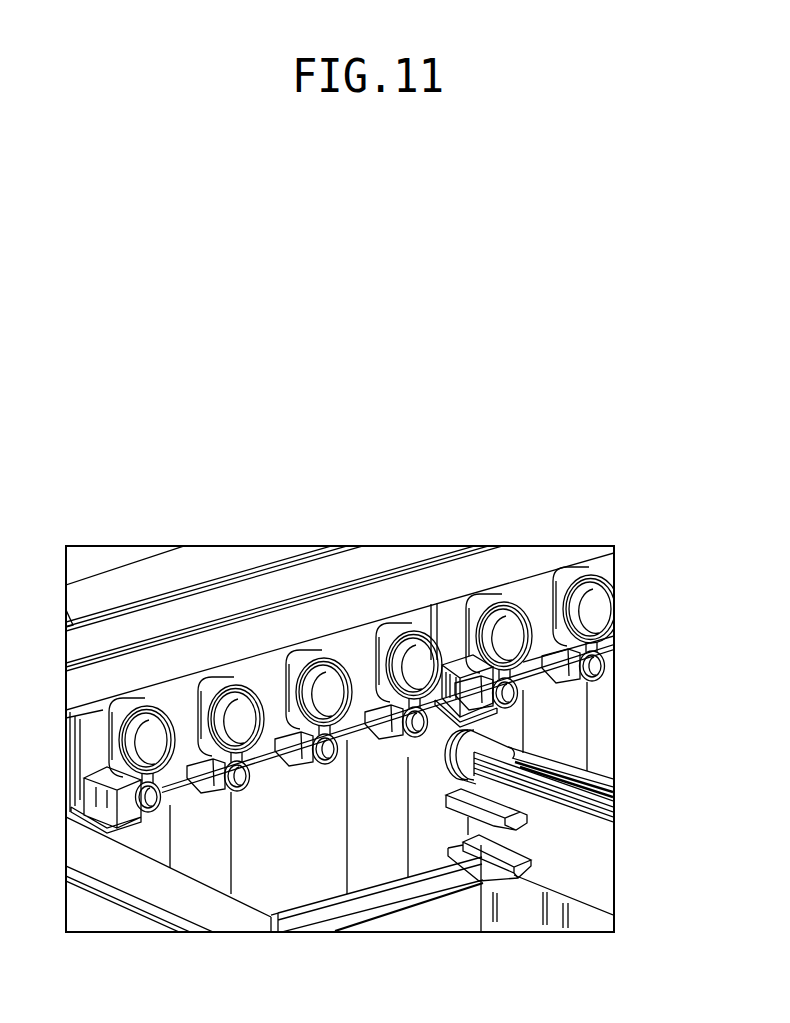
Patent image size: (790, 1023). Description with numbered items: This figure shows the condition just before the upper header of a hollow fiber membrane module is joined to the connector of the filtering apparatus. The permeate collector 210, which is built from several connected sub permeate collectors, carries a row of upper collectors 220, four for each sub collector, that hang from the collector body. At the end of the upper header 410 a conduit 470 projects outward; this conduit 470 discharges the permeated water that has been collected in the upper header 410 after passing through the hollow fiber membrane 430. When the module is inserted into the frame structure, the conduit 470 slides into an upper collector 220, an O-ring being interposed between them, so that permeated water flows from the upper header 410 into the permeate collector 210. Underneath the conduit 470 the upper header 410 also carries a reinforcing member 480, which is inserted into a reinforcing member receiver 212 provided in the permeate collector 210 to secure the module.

The permeate collector 210 is at (358, 650).
The reinforcing member receiver 212 is at (298, 743).
The upper collector 220 is at (222, 700).
The upper header 410 is at (594, 854).
The hollow fiber membrane 430 is at (538, 898).
The conduit 470 is at (498, 748).
The reinforcing member 480 is at (438, 800).